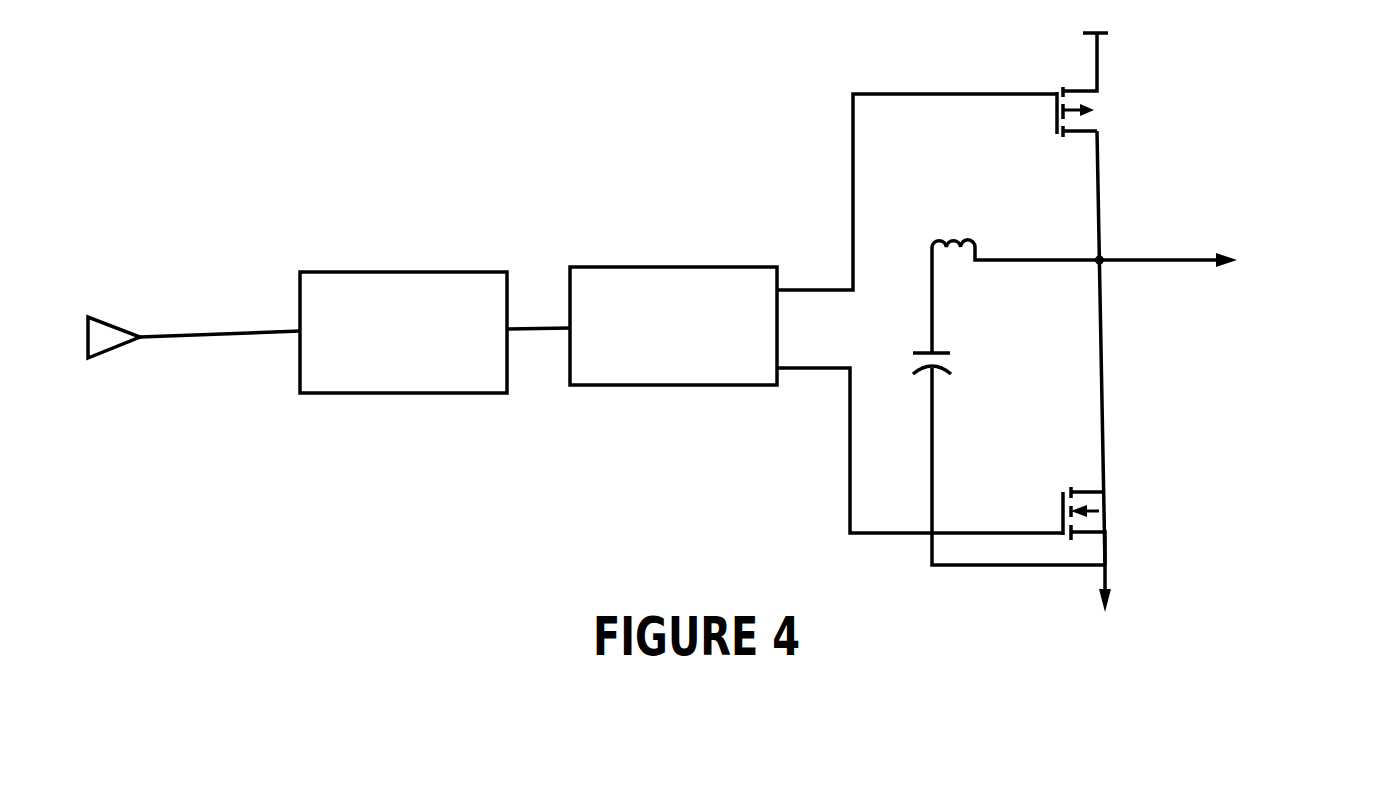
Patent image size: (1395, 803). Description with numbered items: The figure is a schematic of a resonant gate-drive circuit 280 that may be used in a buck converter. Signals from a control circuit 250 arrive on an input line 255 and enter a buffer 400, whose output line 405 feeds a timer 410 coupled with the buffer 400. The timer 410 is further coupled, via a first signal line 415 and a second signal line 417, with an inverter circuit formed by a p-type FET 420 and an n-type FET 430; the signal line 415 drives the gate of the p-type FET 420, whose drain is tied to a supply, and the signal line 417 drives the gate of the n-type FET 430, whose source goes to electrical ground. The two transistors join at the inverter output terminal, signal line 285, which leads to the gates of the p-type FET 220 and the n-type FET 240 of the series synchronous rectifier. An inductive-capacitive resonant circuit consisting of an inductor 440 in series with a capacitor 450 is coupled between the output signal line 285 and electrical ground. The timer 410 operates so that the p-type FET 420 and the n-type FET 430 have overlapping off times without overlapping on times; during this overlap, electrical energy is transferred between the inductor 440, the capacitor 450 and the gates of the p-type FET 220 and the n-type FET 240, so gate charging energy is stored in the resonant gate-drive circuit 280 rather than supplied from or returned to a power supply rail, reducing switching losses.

The resonant gate-drive circuit 280 is at (684, 104).
The control circuit 250 is at (190, 312).
The control input signal line 255 is at (253, 337).
The buffer 400 is at (402, 272).
The buffer output line 405 is at (521, 328).
The timer 410 is at (675, 267).
The signal line 415 is at (853, 135).
The signal line 417 is at (860, 535).
The p-type FET 420 is at (1100, 100).
The n-type FET 430 is at (1103, 510).
The inductor 440 is at (958, 239).
The capacitor 450 is at (940, 352).
The signal line 285 is at (1120, 265).
The p-type FET 220 is at (1244, 192).
The n-type FET 240 is at (1245, 227).